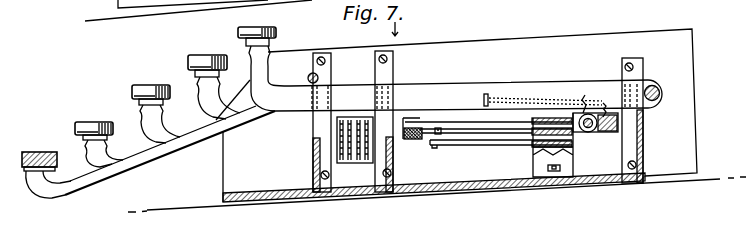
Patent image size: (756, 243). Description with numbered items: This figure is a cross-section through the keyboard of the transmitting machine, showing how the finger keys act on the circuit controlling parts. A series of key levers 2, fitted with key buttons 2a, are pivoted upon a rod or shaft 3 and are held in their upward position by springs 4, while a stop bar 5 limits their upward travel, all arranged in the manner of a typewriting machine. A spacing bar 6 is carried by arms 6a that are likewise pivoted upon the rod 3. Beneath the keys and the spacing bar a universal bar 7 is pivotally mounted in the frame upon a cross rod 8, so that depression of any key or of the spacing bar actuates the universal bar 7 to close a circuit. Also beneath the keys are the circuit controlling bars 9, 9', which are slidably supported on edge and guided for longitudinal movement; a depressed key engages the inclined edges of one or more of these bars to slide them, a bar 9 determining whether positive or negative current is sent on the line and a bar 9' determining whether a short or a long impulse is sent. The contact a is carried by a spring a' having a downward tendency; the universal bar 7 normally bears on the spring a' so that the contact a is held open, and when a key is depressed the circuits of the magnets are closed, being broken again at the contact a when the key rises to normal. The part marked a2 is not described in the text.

The key levers 2 is at (198, 138).
The key buttons 2a is at (127, 105).
The rod or shaft 3 is at (654, 86).
The springs 4 is at (490, 96).
The stop bar 5 is at (308, 77).
The spacing bar 6 is at (37, 147).
The arms 6a is at (92, 210).
The universal bar 7 is at (409, 124).
The cross rod 8 is at (587, 133).
The circuit controlling bars 9 is at (360, 171).
The circuit controlling bars 9' is at (339, 180).
The contact a is at (488, 111).
The spring a' is at (501, 149).
The pin a2 is at (431, 140).